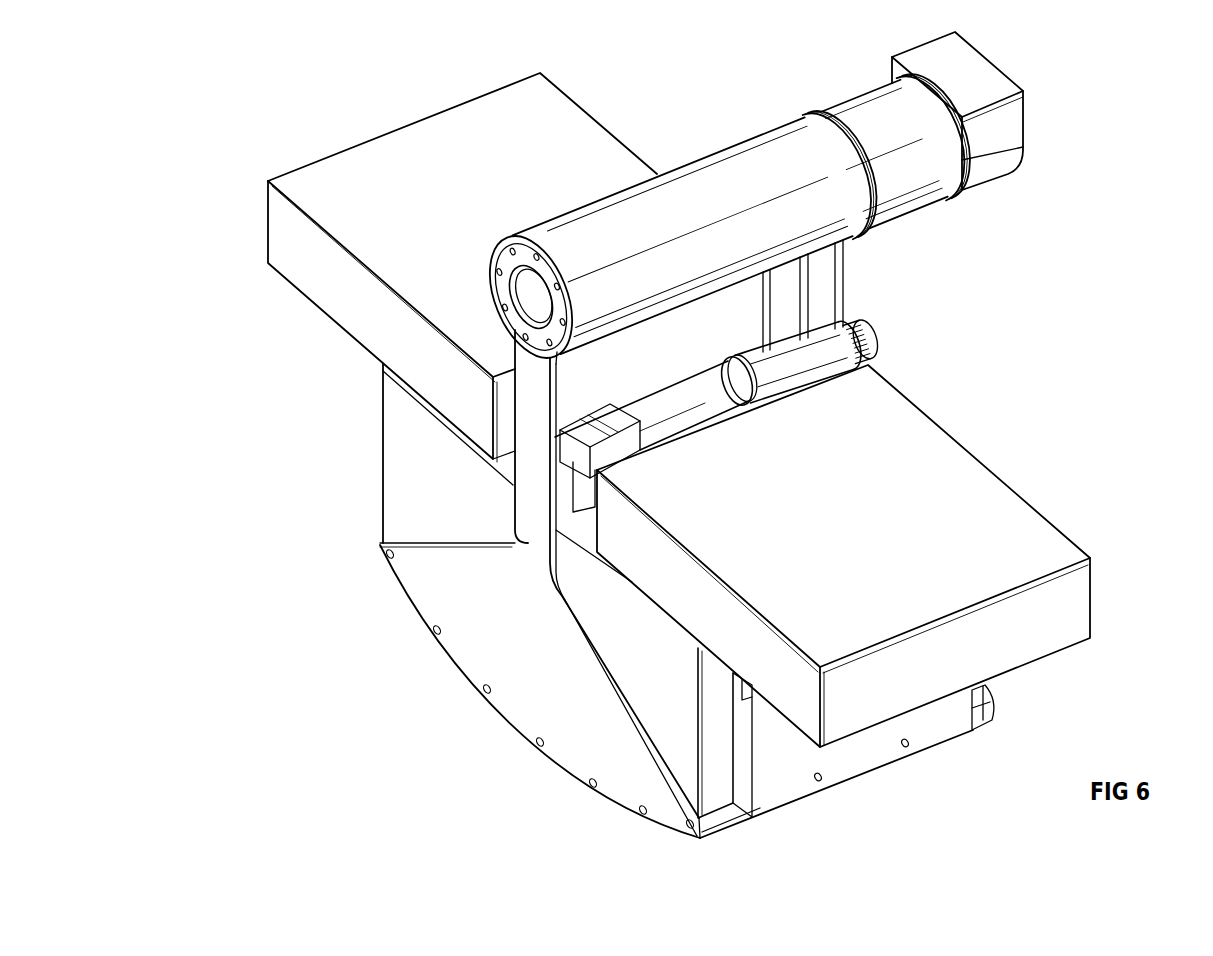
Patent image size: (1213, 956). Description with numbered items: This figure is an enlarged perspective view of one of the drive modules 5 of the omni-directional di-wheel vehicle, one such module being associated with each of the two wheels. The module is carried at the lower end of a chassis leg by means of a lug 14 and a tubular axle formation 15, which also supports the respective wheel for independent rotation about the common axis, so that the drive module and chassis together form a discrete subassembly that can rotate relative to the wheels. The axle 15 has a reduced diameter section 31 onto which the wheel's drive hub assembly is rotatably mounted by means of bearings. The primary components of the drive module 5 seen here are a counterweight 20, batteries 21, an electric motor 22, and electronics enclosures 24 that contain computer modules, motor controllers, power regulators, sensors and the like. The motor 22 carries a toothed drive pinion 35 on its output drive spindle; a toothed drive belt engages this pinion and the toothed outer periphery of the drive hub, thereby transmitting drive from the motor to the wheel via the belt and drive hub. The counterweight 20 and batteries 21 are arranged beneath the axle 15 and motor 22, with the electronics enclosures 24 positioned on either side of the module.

The drive module 5 is at (304, 92).
The lug 14 is at (980, 80).
The tubular axle formation 15 is at (705, 190).
The counterweight 20 is at (490, 635).
The batteries 21 is at (405, 481).
The electric motor 22 is at (667, 408).
The electronics enclosure 24 is at (293, 231).
The reduced diameter section 31 is at (858, 102).
The toothed drive pinion 35 is at (873, 330).